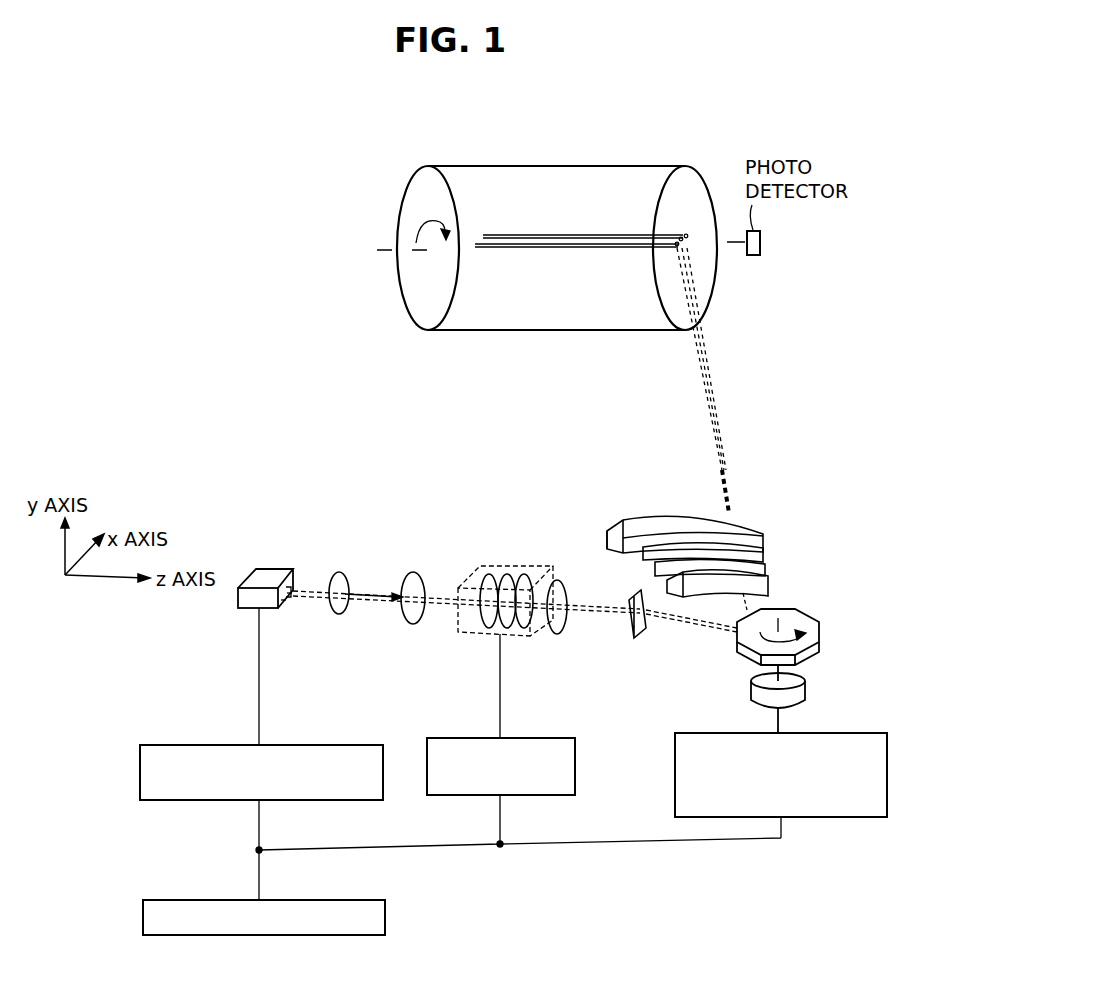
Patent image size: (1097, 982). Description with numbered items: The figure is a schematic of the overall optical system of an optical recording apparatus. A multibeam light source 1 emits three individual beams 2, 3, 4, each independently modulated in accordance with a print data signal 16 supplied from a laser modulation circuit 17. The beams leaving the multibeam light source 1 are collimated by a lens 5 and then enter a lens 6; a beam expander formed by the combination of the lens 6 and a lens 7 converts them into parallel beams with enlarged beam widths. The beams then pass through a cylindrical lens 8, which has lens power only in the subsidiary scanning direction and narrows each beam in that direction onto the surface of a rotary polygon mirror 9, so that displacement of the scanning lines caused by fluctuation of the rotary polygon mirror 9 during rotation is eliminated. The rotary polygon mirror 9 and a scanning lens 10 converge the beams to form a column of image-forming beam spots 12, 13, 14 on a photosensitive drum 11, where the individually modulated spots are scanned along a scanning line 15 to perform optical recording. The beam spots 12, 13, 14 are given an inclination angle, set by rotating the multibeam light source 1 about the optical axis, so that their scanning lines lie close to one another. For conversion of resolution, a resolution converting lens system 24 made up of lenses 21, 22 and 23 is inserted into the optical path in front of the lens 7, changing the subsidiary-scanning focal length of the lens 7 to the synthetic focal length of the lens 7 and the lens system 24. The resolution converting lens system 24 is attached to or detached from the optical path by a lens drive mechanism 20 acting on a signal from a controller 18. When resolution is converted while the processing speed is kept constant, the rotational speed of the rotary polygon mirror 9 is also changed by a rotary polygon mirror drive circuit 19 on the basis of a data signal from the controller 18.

The multibeam light source 1 is at (272, 576).
The beam 2 is at (283, 606).
The beam 3 is at (290, 598).
The beam 4 is at (290, 582).
The lens 5 is at (339, 572).
The lens 6 is at (413, 625).
The lens 7 is at (558, 636).
The cylindrical lens 8 is at (638, 636).
The rotary polygon mirror 9 is at (823, 632).
The scanning lens 10 is at (767, 517).
The photosensitive drum 11 is at (582, 178).
The beam spot 12 is at (681, 238).
The beam spot 13 is at (686, 235).
The beam spot 14 is at (690, 236).
The scanning line 15 is at (548, 236).
The print data signal 16 is at (259, 704).
The laser modulation circuit 17 is at (140, 773).
The controller 18 is at (143, 916).
The rotary polygon mirror drive circuit 19 is at (856, 732).
The lens drive mechanism 20 is at (560, 736).
The lens 21 is at (506, 575).
The lens 22 is at (524, 575).
The lens 23 is at (490, 575).
The resolution converting lens system 24 is at (466, 634).